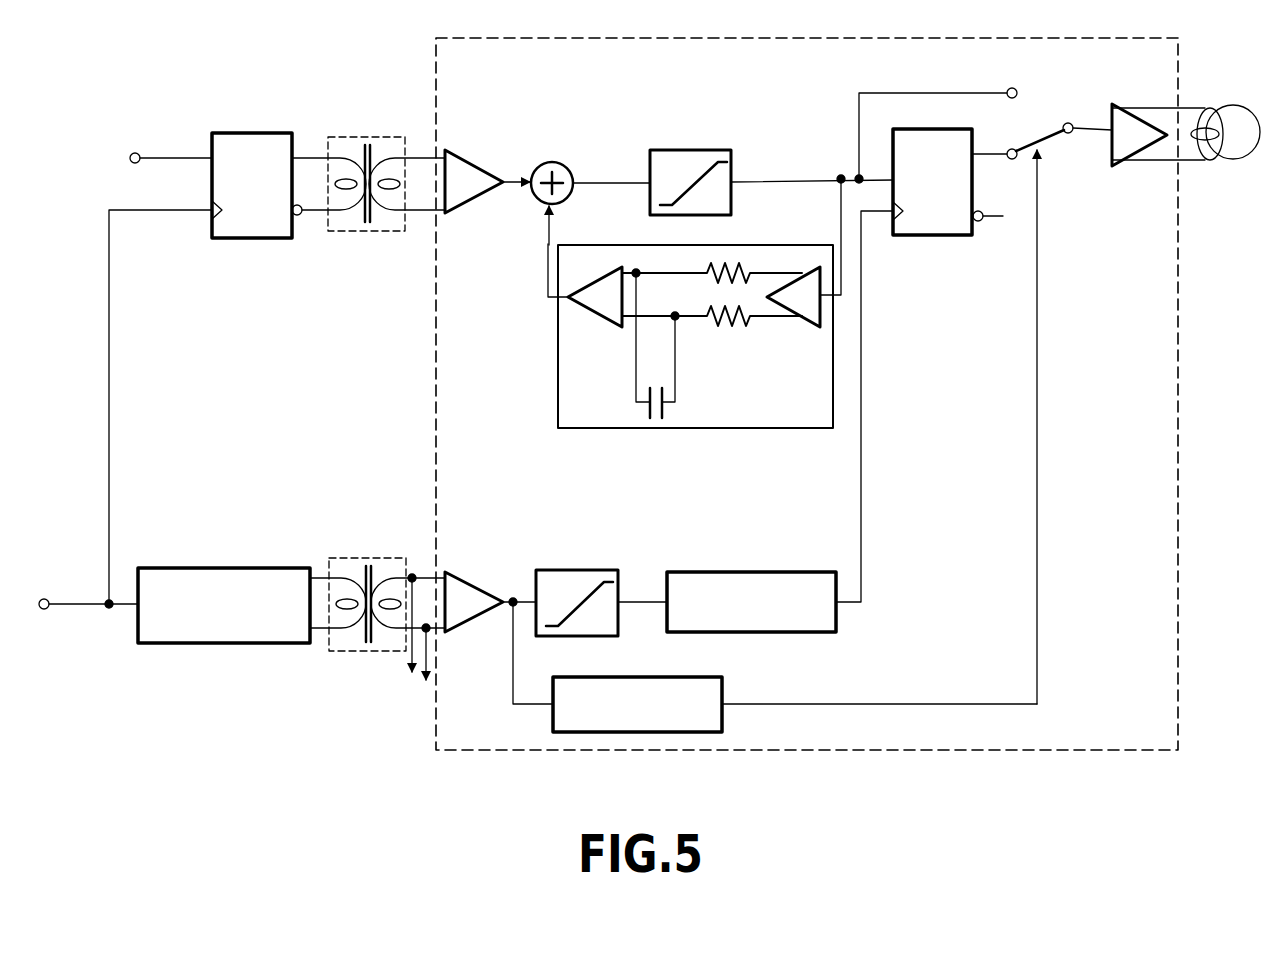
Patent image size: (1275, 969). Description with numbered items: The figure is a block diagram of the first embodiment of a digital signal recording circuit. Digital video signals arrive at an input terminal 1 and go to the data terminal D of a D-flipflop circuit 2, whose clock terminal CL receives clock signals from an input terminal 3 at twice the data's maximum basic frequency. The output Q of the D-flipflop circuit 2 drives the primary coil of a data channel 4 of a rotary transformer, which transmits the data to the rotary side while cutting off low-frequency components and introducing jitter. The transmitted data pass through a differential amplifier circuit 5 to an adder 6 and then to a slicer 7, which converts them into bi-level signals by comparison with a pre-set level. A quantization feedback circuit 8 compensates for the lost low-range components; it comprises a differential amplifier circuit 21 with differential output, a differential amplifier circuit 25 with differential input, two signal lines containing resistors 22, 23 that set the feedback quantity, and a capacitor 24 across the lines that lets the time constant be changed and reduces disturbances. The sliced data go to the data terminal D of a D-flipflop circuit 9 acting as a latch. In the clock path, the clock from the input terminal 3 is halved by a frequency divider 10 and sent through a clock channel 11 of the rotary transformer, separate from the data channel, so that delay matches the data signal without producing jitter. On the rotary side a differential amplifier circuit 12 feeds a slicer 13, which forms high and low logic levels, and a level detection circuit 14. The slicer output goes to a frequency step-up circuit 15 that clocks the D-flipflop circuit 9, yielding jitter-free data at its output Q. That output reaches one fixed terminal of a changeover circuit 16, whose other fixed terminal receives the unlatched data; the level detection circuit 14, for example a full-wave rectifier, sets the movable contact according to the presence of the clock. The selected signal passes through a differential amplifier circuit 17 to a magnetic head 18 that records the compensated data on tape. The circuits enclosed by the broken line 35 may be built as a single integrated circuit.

The input terminal 1 is at (135, 153).
The D-flipflop circuit 2 is at (284, 138).
The input terminal 3 is at (44, 598).
The data channel 4 is at (360, 140).
The differential amplifier circuit 5 is at (465, 150).
The adder 6 is at (552, 160).
The slicer 7 is at (680, 155).
The quantization feedback circuit 8 is at (558, 348).
The D-flipflop circuit 9 is at (935, 236).
The frequency divider 10 is at (240, 566).
The clock channel 11 is at (354, 558).
The differential amplifier circuit 12 is at (470, 570).
The slicer 13 is at (578, 570).
The level detection circuit 14 is at (722, 686).
The frequency step-up circuit 15 is at (724, 570).
The changeover circuit 16 is at (1105, 95).
The differential amplifier circuit 17 is at (1105, 160).
The magnetic head 18 is at (1205, 100).
The differential amplifier circuit 21 is at (803, 318).
The resistor 22 is at (722, 290).
The resistor 23 is at (735, 325).
The capacitor 24 is at (668, 415).
The differential amplifier circuit 25 is at (588, 318).
The broken line 35 is at (452, 68).